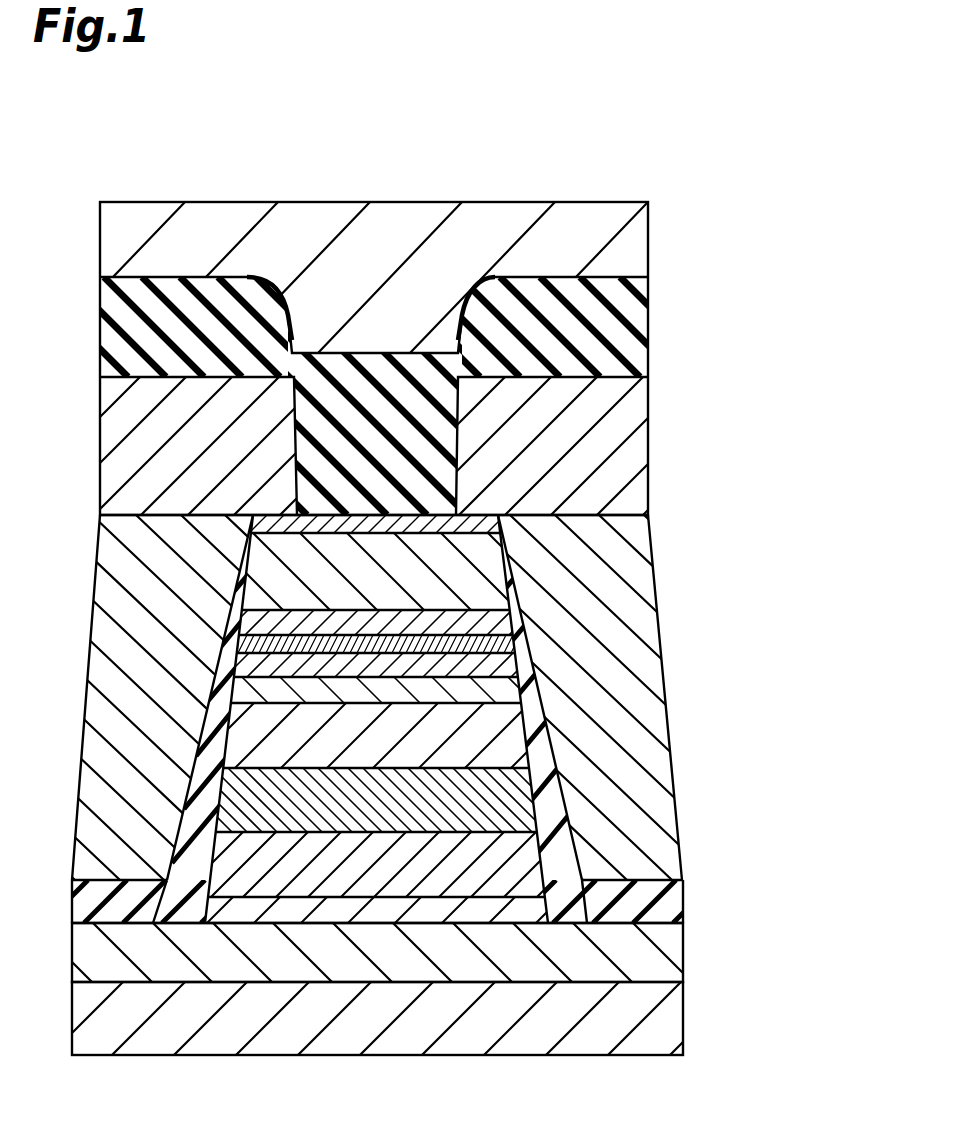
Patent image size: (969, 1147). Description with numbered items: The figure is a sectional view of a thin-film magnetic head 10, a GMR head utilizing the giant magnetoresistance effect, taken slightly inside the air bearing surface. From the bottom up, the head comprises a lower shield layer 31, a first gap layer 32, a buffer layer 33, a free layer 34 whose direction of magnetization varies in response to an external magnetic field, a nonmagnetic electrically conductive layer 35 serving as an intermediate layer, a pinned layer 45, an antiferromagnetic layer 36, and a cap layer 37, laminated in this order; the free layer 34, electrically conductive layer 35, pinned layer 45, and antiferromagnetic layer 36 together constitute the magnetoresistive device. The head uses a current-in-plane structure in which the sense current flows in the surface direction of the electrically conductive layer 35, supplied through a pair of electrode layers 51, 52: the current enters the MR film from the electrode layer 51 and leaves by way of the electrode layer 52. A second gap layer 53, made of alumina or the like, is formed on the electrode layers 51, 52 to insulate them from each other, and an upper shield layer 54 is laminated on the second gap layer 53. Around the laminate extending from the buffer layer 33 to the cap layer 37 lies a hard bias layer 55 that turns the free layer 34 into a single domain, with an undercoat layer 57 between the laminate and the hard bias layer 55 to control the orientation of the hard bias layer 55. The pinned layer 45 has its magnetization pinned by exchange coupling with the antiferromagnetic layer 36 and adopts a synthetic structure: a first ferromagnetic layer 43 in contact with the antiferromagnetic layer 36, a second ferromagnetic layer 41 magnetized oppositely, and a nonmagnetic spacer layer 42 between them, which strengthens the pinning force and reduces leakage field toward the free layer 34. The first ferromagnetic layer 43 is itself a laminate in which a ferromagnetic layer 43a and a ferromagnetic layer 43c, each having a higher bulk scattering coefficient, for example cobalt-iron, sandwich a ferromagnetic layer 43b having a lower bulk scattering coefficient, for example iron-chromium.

The thin-film magnetic head 10 is at (660, 124).
The lower shield layer 31 is at (668, 1017).
The first gap layer 32 is at (668, 952).
The buffer layer 33 is at (548, 915).
The free layer 34 is at (546, 865).
The nonmagnetic electrically conductive layer 35 is at (540, 800).
The antiferromagnetic layer 36 is at (510, 567).
The cap layer 37 is at (492, 518).
The second ferromagnetic layer 41 is at (526, 735).
The nonmagnetic spacer layer 42 is at (522, 690).
The first ferromagnetic layer 43 is at (506, 646).
The ferromagnetic layer (second layer) 43a is at (522, 668).
The ferromagnetic layer (first layer) 43b is at (519, 645).
The ferromagnetic layer (third layer) 43c is at (520, 620).
The pinned layer 45 is at (495, 683).
The electrode layer 51 is at (105, 435).
The electrode layer 52 is at (640, 433).
The second gap layer 53 is at (637, 316).
The upper shield layer 54 is at (637, 233).
The hard bias layer 55 is at (108, 582).
The undercoat layer 57 is at (198, 782).